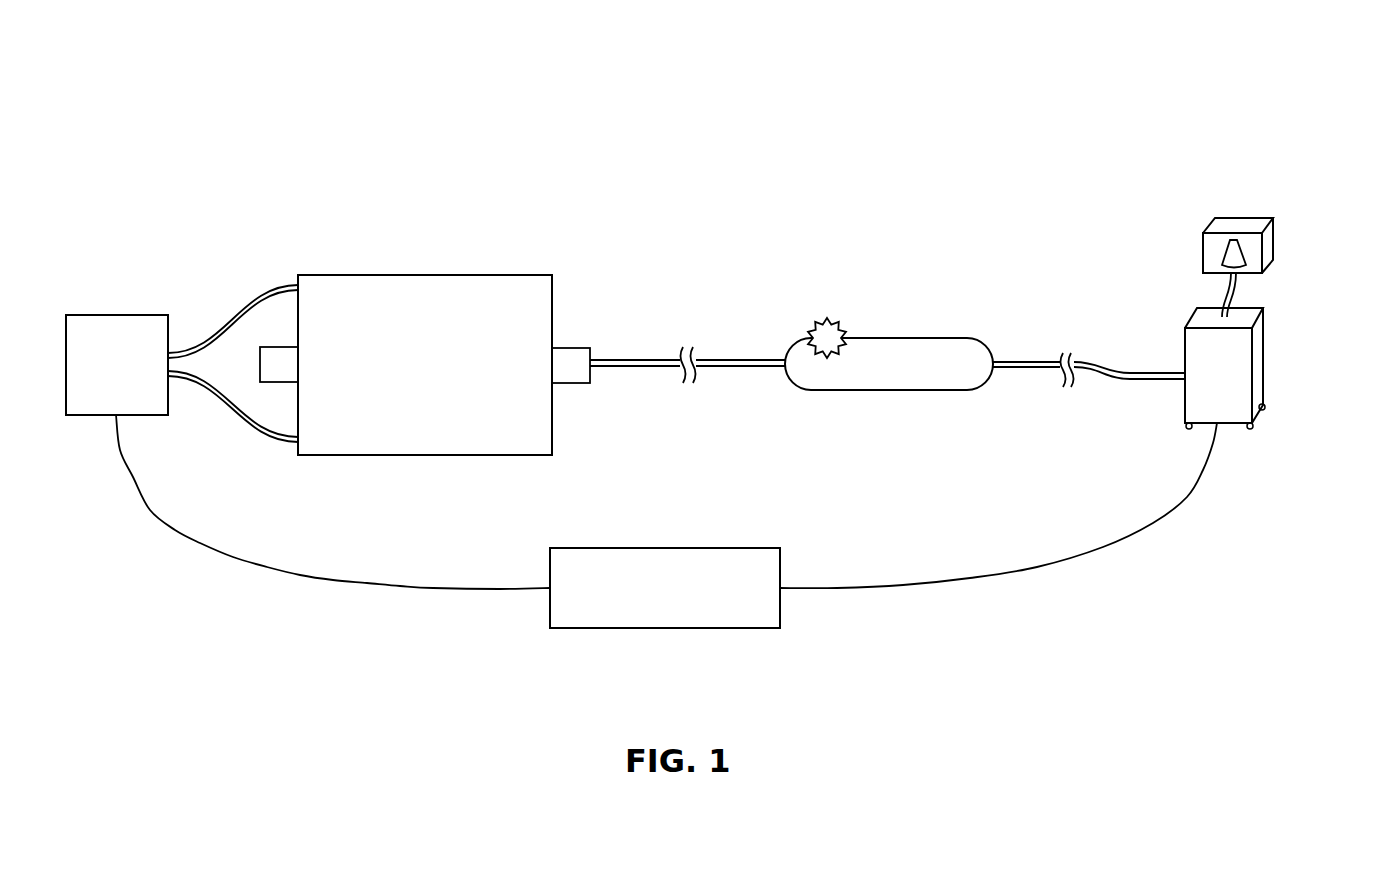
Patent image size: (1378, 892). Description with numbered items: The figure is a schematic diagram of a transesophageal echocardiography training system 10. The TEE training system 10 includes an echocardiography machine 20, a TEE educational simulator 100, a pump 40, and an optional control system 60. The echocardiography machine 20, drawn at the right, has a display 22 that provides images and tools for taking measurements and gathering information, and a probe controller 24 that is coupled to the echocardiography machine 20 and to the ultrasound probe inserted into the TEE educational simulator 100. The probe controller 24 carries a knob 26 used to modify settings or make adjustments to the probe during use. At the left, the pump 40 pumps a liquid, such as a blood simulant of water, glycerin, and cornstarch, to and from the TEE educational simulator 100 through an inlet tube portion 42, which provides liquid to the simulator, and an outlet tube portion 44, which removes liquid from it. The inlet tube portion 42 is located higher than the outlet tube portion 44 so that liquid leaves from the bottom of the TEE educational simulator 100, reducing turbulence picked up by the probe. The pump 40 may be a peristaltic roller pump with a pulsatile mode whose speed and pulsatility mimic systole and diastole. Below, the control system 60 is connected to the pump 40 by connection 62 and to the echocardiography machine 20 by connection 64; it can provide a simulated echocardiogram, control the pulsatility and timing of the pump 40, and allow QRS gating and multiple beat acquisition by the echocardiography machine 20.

The TEE training system 10 is at (116, 130).
The echocardiography machine 20 is at (1290, 296).
The display 22 is at (1253, 255).
The probe controller 24 is at (905, 338).
The knob 26 is at (826, 338).
The pump 40 is at (115, 306).
The inlet tube portion 42 is at (257, 300).
The outlet tube portion 44 is at (238, 407).
The control system 60 is at (669, 528).
The connection 62 is at (395, 585).
The connection 64 is at (928, 583).
The TEE educational simulator 100 is at (427, 262).